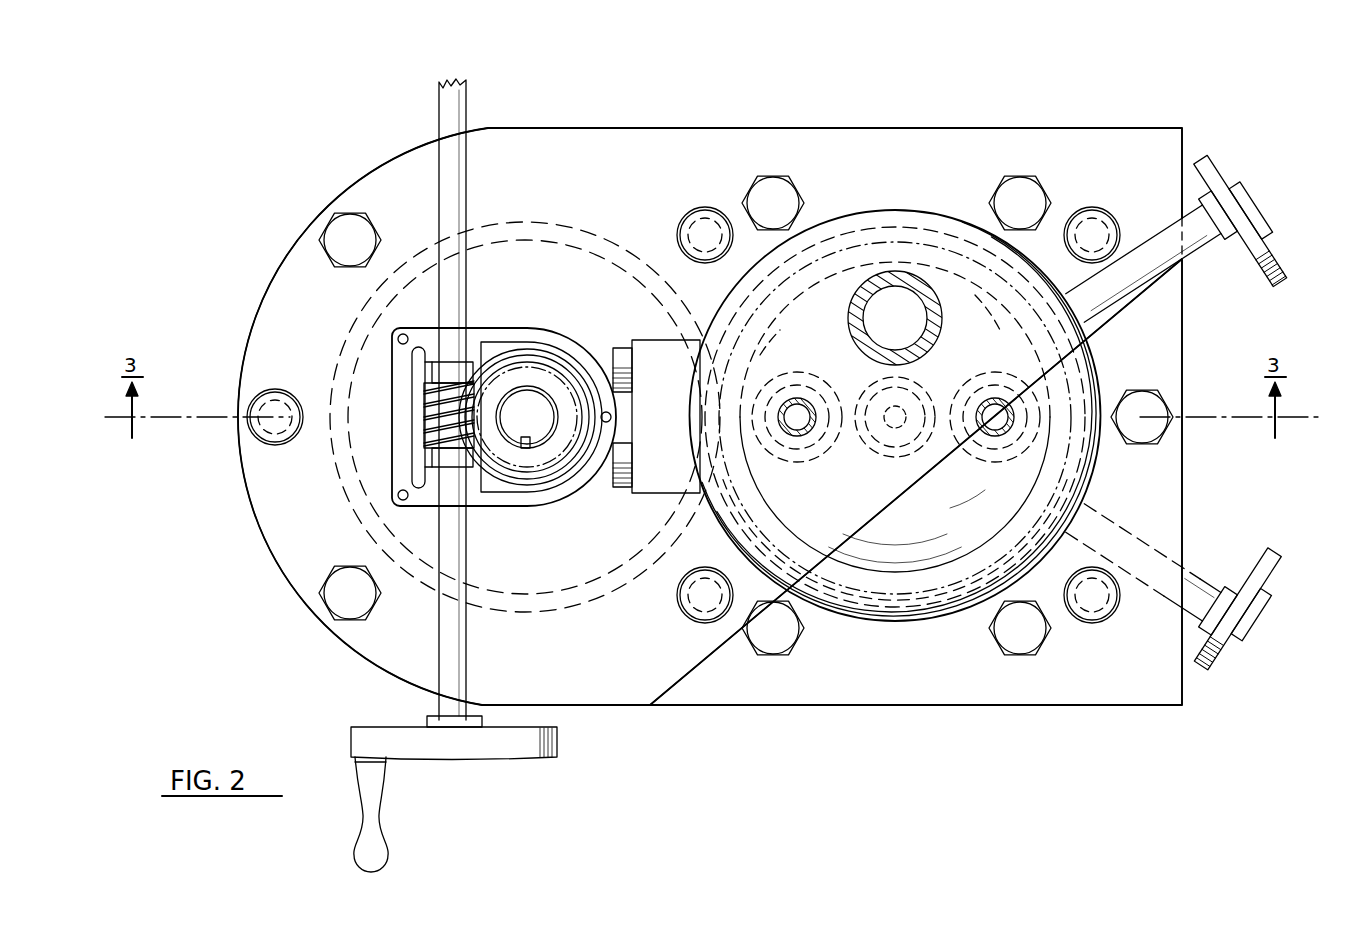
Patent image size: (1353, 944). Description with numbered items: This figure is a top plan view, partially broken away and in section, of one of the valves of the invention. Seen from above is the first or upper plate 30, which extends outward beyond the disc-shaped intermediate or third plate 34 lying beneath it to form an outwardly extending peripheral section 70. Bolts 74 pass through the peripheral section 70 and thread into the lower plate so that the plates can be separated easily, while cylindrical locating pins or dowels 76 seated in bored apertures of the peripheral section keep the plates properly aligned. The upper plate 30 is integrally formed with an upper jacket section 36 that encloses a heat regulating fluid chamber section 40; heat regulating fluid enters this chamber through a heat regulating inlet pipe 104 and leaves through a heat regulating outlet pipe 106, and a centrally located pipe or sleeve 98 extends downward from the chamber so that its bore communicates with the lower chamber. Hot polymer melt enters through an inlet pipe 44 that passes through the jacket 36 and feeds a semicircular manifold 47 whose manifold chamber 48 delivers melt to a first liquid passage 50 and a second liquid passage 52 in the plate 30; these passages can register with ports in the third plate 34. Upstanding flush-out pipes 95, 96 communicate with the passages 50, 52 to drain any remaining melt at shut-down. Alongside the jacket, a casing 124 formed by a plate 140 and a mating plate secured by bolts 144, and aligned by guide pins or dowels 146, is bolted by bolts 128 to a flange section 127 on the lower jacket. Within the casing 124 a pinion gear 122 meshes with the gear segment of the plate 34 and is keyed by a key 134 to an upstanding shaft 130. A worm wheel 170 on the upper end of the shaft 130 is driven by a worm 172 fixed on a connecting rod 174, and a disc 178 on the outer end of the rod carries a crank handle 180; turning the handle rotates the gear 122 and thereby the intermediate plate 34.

The first or upper plate 30 is at (888, 128).
The intermediate or third plate 34 is at (877, 612).
The upper jacket section 36 is at (1082, 355).
The heat regulating fluid chamber section 40 is at (1092, 472).
The inlet pipe 44 is at (890, 302).
The manifold 47 is at (777, 328).
The manifold chamber 48 is at (972, 300).
The first liquid passage 50 is at (815, 452).
The second liquid passage 52 is at (955, 440).
The peripheral section 70 is at (1054, 142).
The bolts 74 is at (778, 198).
The locating pins or dowels 76 is at (704, 212).
The flush-out pipe 95 is at (797, 437).
The flush-out pipe 96 is at (995, 437).
The pipe or sleeve 98 is at (890, 448).
The heat regulating inlet pipe 104 is at (1195, 248).
The heat regulating outlet pipe 106 is at (1210, 580).
The pinion gear 122 is at (528, 222).
The casing 124 is at (372, 155).
The flange section 127 is at (665, 492).
The bolts 128 is at (620, 346).
The upstanding shaft 130 is at (548, 432).
The key 134 is at (525, 450).
The plate 140 is at (298, 298).
The bolts 144 is at (345, 228).
The guide pins or dowels 146 is at (272, 432).
The worm wheel 170 is at (515, 372).
The worm 172 is at (440, 422).
The connecting rod 174 is at (458, 96).
The disc 178 is at (545, 758).
The crank handle 180 is at (378, 840).